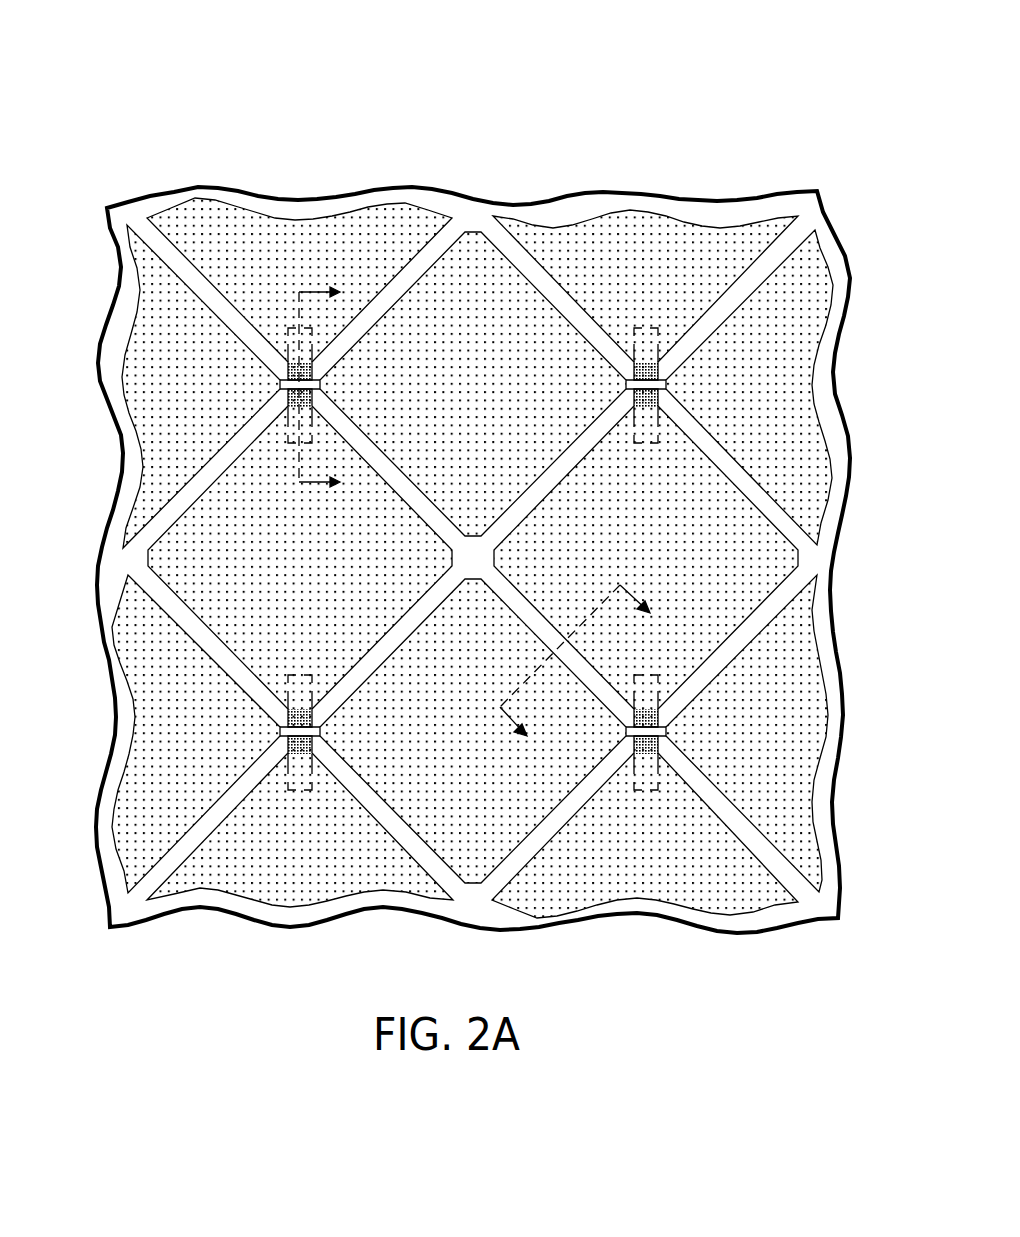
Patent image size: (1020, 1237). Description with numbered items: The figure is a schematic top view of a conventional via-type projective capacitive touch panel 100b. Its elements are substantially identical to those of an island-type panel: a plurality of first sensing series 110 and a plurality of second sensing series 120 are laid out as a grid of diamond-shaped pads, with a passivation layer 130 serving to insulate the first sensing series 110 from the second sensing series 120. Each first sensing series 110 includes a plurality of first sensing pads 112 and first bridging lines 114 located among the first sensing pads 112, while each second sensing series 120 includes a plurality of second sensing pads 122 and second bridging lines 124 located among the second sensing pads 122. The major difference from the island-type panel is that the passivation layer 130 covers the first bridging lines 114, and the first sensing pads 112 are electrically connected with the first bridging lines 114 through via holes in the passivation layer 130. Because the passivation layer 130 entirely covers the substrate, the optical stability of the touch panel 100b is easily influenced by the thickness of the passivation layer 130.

The projective capacitive touch panel 100b is at (450, 497).
The first sensing series 110 is at (330, 12).
The first sensing pads 112 is at (88, 382).
The first bridging lines 114 is at (385, 400).
The second sensing series 120 is at (330, 95).
The second sensing pads 122 is at (205, 540).
The second bridging lines 124 is at (473, 459).
The passivation layer 130 is at (738, 200).